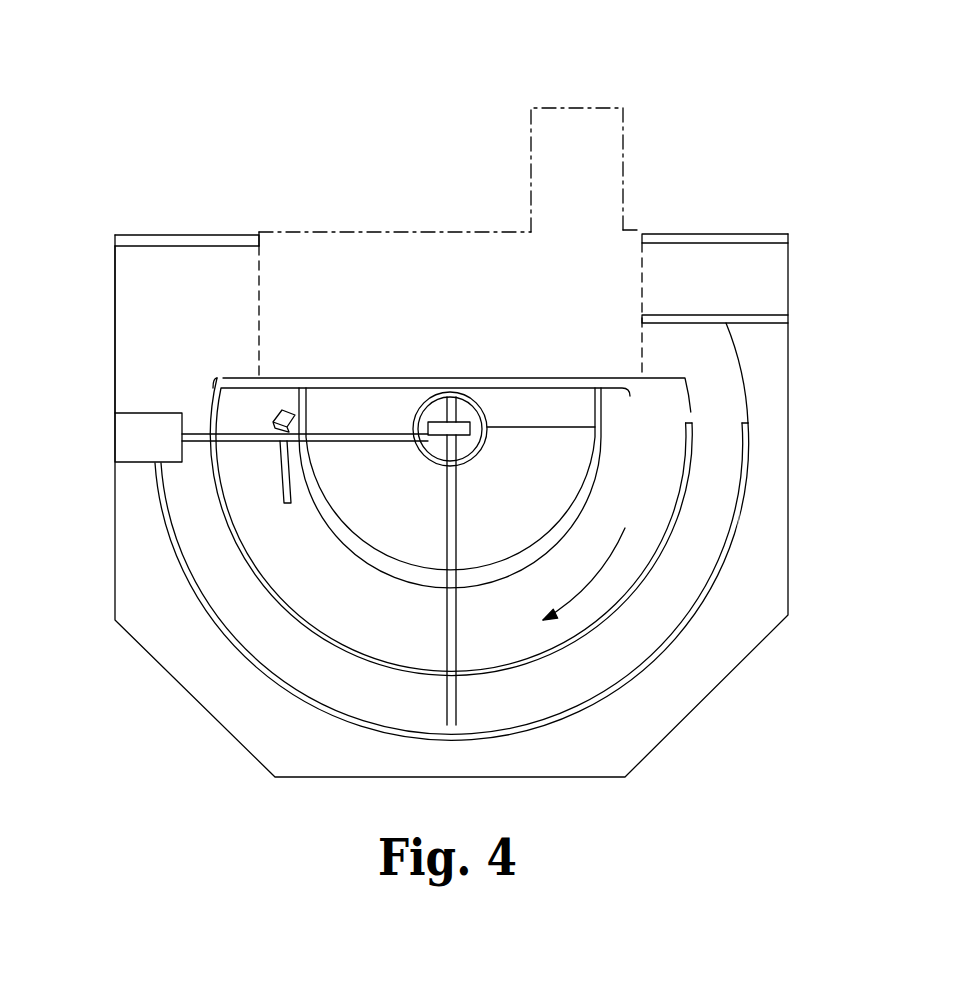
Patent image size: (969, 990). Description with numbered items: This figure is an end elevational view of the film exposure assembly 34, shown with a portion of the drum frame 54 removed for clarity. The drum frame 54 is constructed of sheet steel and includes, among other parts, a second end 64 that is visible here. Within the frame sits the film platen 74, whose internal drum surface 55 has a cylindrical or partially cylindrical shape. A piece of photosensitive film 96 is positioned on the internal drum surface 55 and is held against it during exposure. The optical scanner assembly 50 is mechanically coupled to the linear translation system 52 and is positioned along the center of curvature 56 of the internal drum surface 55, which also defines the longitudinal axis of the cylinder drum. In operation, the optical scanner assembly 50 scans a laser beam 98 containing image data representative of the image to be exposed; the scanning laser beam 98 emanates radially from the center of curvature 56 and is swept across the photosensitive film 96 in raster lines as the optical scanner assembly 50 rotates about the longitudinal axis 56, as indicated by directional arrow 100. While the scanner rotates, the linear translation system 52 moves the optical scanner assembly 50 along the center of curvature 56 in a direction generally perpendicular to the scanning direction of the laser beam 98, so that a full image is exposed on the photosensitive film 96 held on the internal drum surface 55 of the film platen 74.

The film exposure assembly 34 is at (308, 135).
The linear translation system 52 is at (560, 108).
The second end 64 is at (113, 353).
The drum frame 54 is at (113, 393).
The center of curvature 56 is at (446, 425).
The optical scanner assembly 50 is at (682, 412).
The internal drum surface 55 is at (737, 407).
The photosensitive film 96 is at (728, 532).
The film platen 74 is at (727, 552).
The scanning laser beam 98 is at (457, 680).
The directional arrow 100 is at (595, 580).